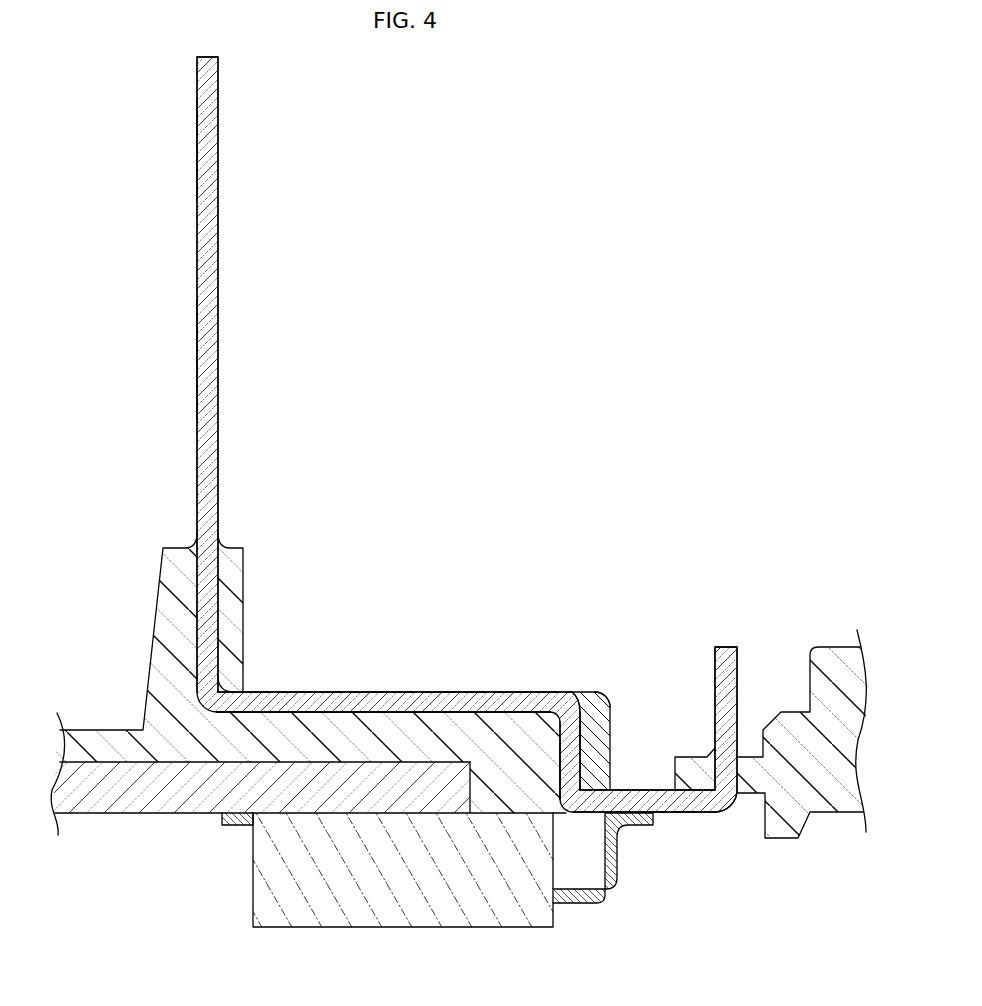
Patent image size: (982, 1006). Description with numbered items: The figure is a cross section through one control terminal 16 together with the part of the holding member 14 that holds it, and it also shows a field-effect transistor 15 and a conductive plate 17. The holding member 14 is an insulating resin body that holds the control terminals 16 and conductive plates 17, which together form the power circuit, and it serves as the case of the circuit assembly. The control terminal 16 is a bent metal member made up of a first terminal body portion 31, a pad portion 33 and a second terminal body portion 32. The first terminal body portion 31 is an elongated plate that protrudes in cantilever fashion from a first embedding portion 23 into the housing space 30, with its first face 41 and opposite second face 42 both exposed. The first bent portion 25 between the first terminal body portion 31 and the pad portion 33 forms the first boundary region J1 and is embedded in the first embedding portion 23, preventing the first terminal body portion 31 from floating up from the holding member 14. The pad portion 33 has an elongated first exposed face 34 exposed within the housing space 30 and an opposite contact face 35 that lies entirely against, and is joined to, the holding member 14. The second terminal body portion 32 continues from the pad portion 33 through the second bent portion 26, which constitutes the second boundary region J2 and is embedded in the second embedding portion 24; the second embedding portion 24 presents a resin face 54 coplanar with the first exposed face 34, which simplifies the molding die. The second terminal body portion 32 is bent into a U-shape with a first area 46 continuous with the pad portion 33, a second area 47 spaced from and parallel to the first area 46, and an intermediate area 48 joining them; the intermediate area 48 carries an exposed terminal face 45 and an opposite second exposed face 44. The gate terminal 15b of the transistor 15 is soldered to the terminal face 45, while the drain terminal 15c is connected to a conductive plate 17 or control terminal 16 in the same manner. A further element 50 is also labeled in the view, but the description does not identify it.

The holding member 14 is at (115, 765).
The electronic component 15 is at (277, 930).
The gate terminal 15b is at (614, 858).
The drain terminal 15c is at (235, 826).
The control terminal 16 is at (197, 358).
The conductive plate 17 is at (163, 798).
The first embedding portion 23 is at (163, 658).
The second embedding portion 24 is at (606, 700).
The first bent portion 25 is at (224, 685).
The second bent portion 26 is at (572, 700).
The housing space 30 is at (483, 650).
The first terminal body portion 31 is at (212, 196).
The second terminal body portion 32 is at (637, 800).
The pad portion 33 is at (395, 705).
The first exposed face 34 is at (340, 692).
The contact face 35 is at (348, 712).
The first face 41 is at (220, 118).
The second face 42 is at (196, 148).
The second exposed face 44 is at (655, 790).
The terminal face 45 is at (672, 817).
The first area 46 is at (546, 772).
The second area 47 is at (726, 657).
The intermediate area 48 is at (693, 813).
The adhesive layer 50 is at (399, 737).
The resin face 54 is at (588, 692).
The first boundary region J1 is at (190, 707).
The second boundary region J2 is at (541, 723).